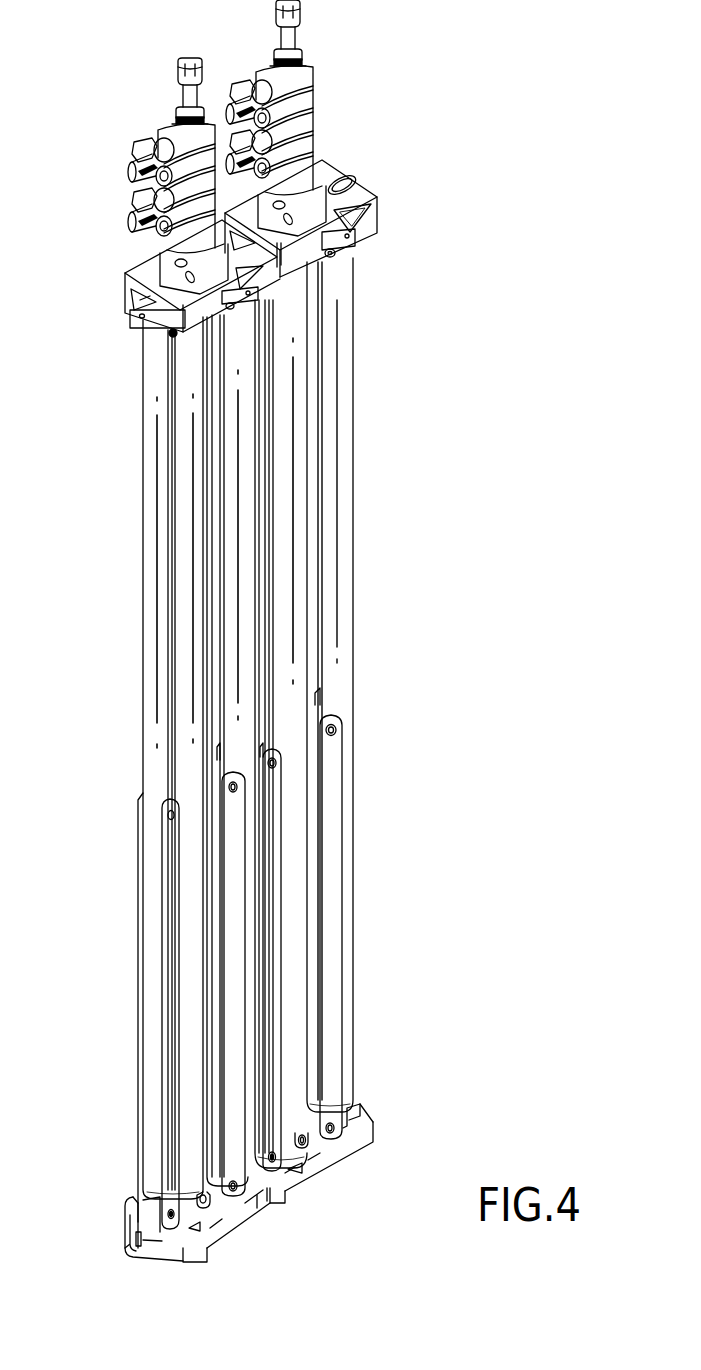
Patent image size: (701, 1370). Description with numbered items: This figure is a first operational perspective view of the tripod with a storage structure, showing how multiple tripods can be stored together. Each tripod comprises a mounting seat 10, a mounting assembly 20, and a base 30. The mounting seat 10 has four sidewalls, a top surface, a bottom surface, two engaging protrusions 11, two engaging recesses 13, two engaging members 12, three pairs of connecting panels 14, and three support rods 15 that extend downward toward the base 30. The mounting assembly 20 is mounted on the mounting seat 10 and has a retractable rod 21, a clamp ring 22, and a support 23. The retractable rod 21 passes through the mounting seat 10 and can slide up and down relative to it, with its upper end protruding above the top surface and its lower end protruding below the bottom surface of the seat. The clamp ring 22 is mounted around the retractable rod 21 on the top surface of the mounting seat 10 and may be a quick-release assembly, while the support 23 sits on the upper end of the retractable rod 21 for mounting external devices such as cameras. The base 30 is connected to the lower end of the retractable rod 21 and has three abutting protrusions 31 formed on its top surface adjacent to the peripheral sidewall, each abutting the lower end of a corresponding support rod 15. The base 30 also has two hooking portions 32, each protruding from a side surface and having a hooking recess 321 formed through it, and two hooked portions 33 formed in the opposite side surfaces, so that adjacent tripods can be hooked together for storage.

The mounting seat 10 is at (378, 180).
The engaging protrusion 11 is at (358, 241).
The engaging member 12 is at (355, 218).
The engaging recess 13 is at (336, 188).
The connecting panel 14 is at (334, 264).
The support rod 15 is at (338, 531).
The mounting assembly 20 is at (326, 48).
The retractable rod 21 is at (183, 447).
The clamp ring 22 is at (141, 234).
The support 23 is at (165, 152).
The base 30 is at (100, 1224).
The abutting protrusion 31 is at (358, 1116).
The hooking portion 32 is at (132, 1253).
The hooking recess 321 is at (138, 1238).
The hooked portion 33 is at (303, 1194).